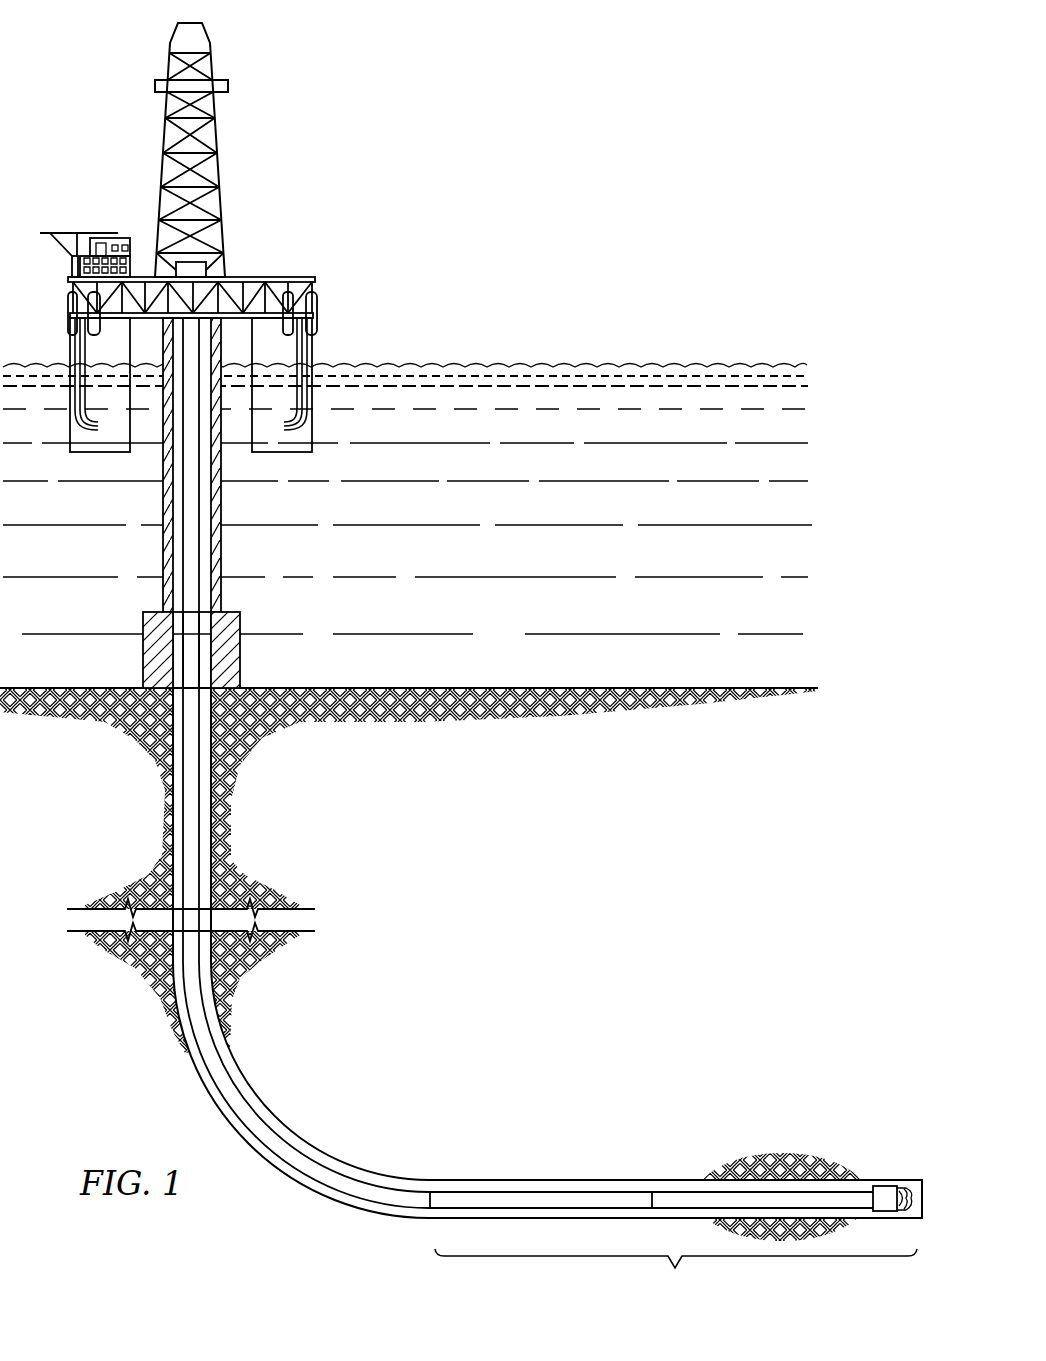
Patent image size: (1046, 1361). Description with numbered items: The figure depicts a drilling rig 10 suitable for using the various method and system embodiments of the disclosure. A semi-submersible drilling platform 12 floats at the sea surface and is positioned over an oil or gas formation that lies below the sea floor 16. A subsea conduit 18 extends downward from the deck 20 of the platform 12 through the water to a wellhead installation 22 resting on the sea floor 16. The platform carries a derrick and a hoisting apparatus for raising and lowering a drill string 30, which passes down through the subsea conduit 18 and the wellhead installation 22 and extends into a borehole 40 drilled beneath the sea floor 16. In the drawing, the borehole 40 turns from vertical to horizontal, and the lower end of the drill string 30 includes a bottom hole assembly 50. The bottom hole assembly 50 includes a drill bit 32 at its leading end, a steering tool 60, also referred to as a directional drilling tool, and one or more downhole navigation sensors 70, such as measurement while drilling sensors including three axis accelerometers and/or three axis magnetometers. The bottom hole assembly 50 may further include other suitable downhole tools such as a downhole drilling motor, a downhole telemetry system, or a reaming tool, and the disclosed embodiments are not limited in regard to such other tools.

The drilling rig 10 is at (314, 150).
The semi-submersible drilling platform 12 is at (300, 277).
The sea floor 16 is at (472, 688).
The subsea conduit 18 is at (222, 548).
The deck 20 is at (318, 318).
The wellhead installation 22 is at (228, 612).
The drill string 30 is at (192, 467).
The drill bit 32 is at (889, 1192).
The borehole 40 is at (176, 802).
The bottom hole assembly 50 is at (676, 1276).
The steering tool 60 is at (687, 1199).
The downhole navigation sensors 70 is at (764, 1197).